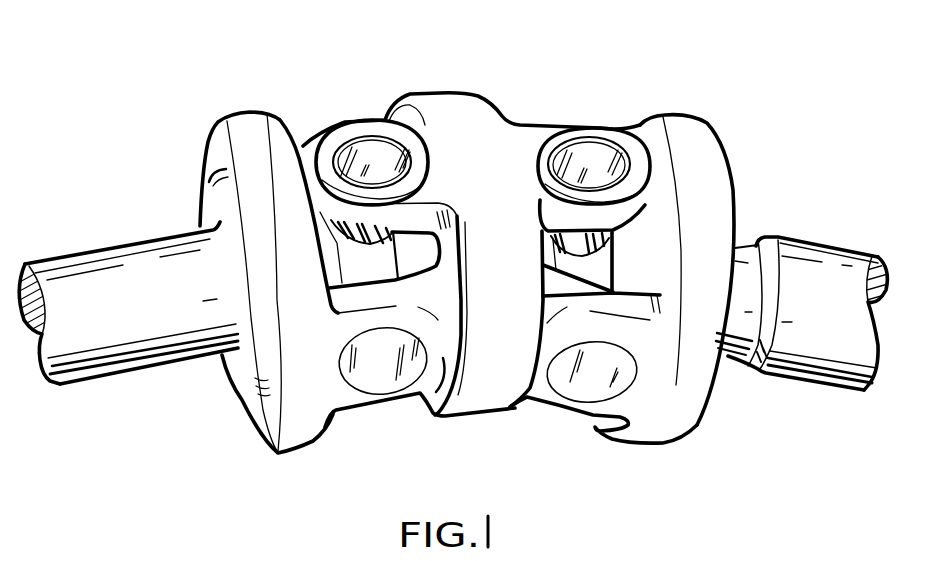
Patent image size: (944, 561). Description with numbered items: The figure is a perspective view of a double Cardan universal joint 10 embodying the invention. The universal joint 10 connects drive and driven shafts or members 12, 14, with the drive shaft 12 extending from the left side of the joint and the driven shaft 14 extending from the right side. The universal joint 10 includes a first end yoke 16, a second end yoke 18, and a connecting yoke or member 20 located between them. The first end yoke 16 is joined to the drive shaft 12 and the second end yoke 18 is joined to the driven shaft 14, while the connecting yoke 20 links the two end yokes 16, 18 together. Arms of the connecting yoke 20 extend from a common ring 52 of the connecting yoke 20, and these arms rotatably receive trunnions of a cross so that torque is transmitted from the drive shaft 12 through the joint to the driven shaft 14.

The double Cardan universal joint 10 is at (338, 115).
The drive shaft 12 is at (122, 245).
The driven shaft 14 is at (812, 240).
The first end yoke 16 is at (241, 106).
The second end yoke 18 is at (700, 111).
The connecting yoke 20 is at (390, 90).
The common ring 52 is at (474, 93).